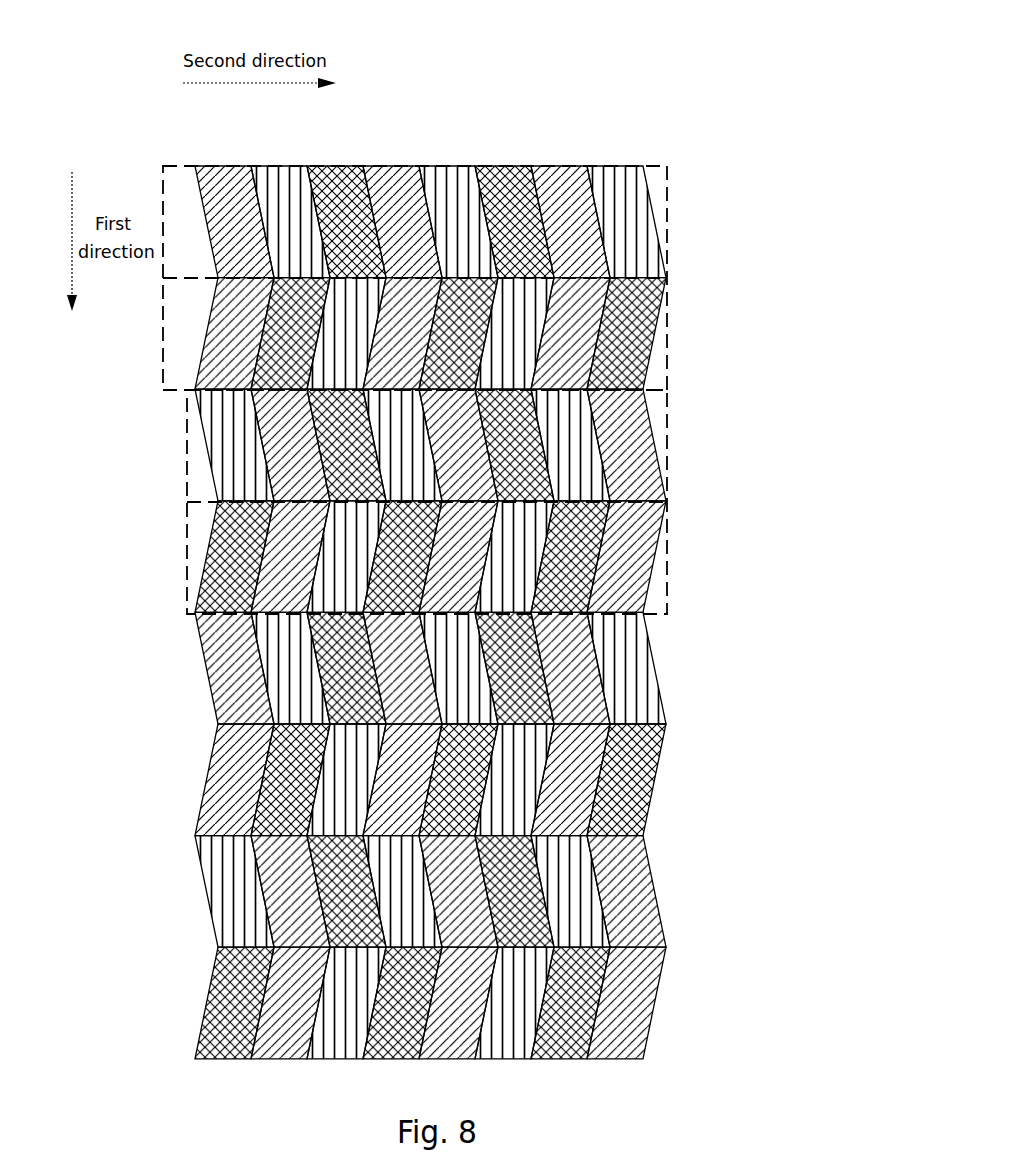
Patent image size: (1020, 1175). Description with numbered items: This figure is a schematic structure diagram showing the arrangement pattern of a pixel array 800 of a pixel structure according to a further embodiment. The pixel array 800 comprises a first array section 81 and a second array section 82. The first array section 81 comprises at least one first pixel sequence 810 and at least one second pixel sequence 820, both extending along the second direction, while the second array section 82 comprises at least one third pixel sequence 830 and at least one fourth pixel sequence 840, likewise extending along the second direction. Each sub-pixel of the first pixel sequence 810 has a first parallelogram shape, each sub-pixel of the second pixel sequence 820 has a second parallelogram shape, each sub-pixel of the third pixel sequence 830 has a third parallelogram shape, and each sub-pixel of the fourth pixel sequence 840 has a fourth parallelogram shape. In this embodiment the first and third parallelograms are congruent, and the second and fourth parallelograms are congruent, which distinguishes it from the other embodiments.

The pixel array 800 is at (675, 25).
The first array section 81 is at (504, 278).
The second array section 82 is at (518, 499).
The first pixel sequence 810 is at (667, 237).
The second pixel sequence 820 is at (667, 333).
The third pixel sequence 830 is at (667, 448).
The fourth pixel sequence 840 is at (667, 555).